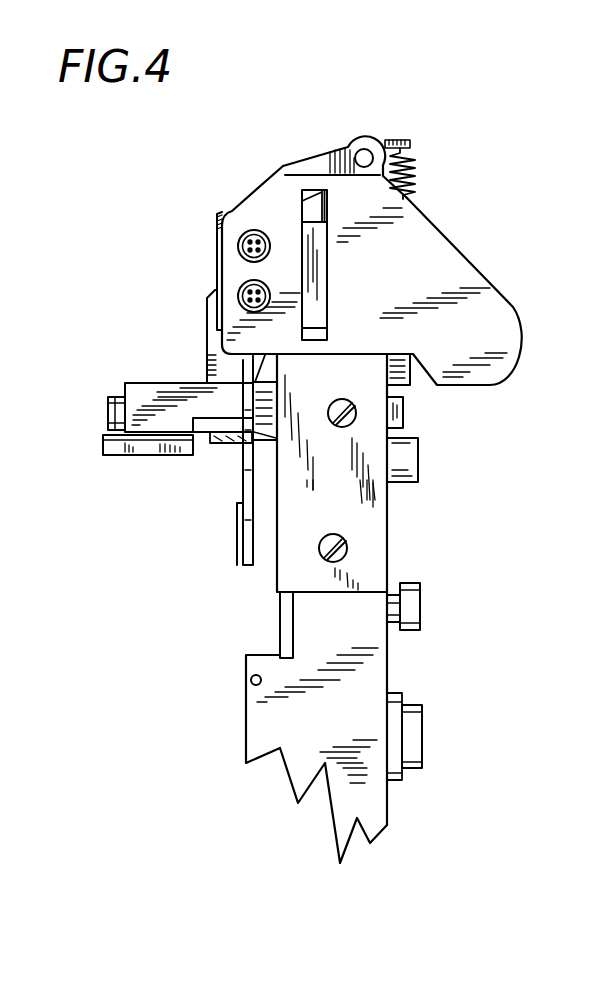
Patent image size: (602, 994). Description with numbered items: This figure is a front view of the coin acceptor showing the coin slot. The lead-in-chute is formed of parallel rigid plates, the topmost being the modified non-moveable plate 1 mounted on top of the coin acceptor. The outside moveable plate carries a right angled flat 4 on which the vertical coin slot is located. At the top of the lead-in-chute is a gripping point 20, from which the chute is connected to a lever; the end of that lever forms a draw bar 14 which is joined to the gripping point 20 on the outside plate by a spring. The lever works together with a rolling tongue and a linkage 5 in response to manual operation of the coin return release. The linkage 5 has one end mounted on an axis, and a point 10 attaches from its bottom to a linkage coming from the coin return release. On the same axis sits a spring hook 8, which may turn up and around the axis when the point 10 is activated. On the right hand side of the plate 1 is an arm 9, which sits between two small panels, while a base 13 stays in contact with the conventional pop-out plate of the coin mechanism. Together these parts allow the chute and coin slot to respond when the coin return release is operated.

The non-moveable plate 1 is at (350, 495).
The right angled flat 4 is at (482, 318).
The linkage 5 is at (160, 404).
The spring hook 8 is at (218, 372).
The arm 9 is at (398, 388).
The point 10 is at (105, 417).
The base 13 is at (400, 403).
The draw bar 14 is at (412, 200).
The gripping point 20 is at (402, 140).